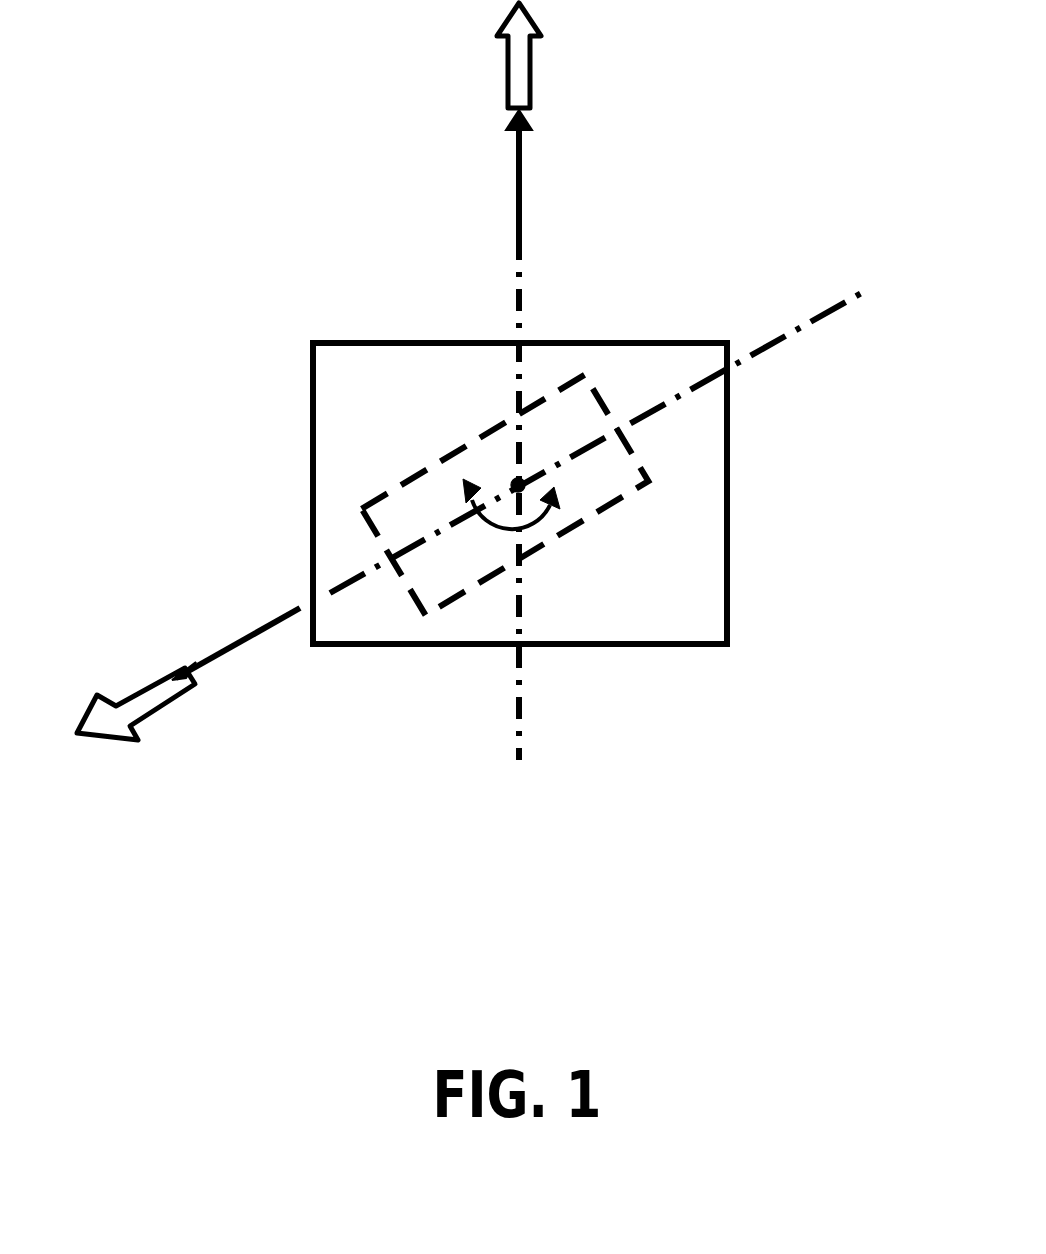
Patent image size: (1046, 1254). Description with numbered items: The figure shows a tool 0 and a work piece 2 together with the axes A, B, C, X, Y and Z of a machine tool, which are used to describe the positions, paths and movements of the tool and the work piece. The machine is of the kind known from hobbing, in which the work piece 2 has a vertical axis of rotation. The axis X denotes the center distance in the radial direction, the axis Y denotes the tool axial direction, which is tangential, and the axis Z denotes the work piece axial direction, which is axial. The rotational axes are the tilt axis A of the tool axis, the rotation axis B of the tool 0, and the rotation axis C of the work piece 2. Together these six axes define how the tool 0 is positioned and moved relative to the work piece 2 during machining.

The tool 0 is at (618, 474).
The work piece 2 is at (618, 613).
The center distance axis X is at (497, 477).
The tool axial direction axis Y is at (472, 515).
The work piece axial direction axis Z is at (576, 381).
The tilt tool axis A is at (495, 532).
The rotation tool axis B is at (74, 620).
The rotation work piece axis C is at (639, 62).